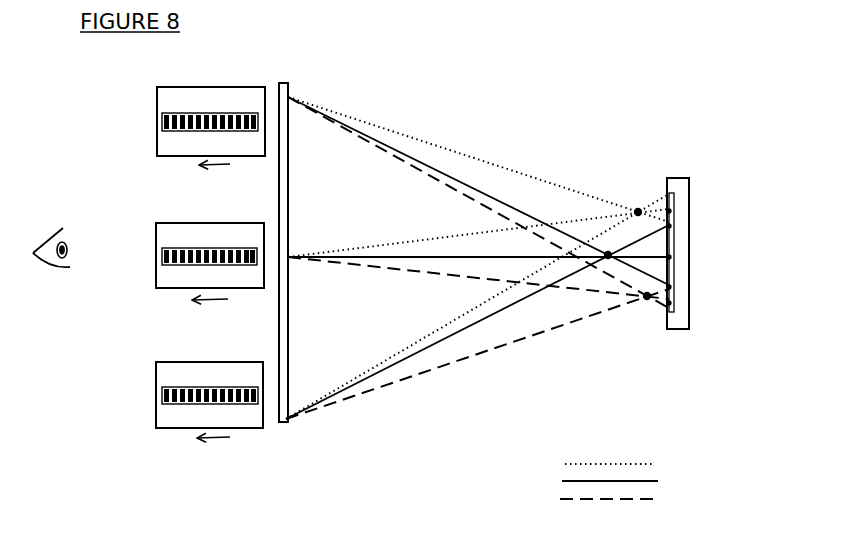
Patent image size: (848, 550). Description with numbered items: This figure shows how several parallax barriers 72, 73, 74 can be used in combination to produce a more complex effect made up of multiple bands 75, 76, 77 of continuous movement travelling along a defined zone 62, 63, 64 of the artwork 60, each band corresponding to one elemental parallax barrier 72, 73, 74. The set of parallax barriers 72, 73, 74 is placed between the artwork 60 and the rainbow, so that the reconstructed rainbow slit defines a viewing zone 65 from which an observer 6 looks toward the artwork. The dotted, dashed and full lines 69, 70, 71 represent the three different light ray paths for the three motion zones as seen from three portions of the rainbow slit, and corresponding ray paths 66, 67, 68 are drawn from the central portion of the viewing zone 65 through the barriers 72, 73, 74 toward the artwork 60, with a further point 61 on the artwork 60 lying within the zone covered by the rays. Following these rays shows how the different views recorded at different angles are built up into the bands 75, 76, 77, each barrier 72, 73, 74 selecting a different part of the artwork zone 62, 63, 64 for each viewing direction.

The viewer eye 6 is at (51, 264).
The artwork 60 is at (692, 186).
The sensor image position of solid ray from top 61 is at (676, 287).
The defined zone of the artwork 62 is at (674, 210).
The defined zone of the artwork 63 is at (674, 258).
The defined zone of the artwork 64 is at (677, 305).
The viewing zone 65 is at (291, 331).
The dashed ray from lens center 66 is at (478, 280).
The solid ray along optical axis 67 is at (478, 267).
The dotted ray from lens center 68 is at (478, 233).
The light ray path line 69 is at (487, 285).
The light ray path line 70 is at (487, 294).
The light ray path line 71 is at (487, 303).
The parallax barrier 72 is at (632, 196).
The parallax barrier 73 is at (606, 260).
The parallax barrier 74 is at (187, 265).
The band of continuous movement effect 75 is at (211, 113).
The band of continuous movement effect 76 is at (210, 248).
The band of continuous movement effect 77 is at (209, 386).